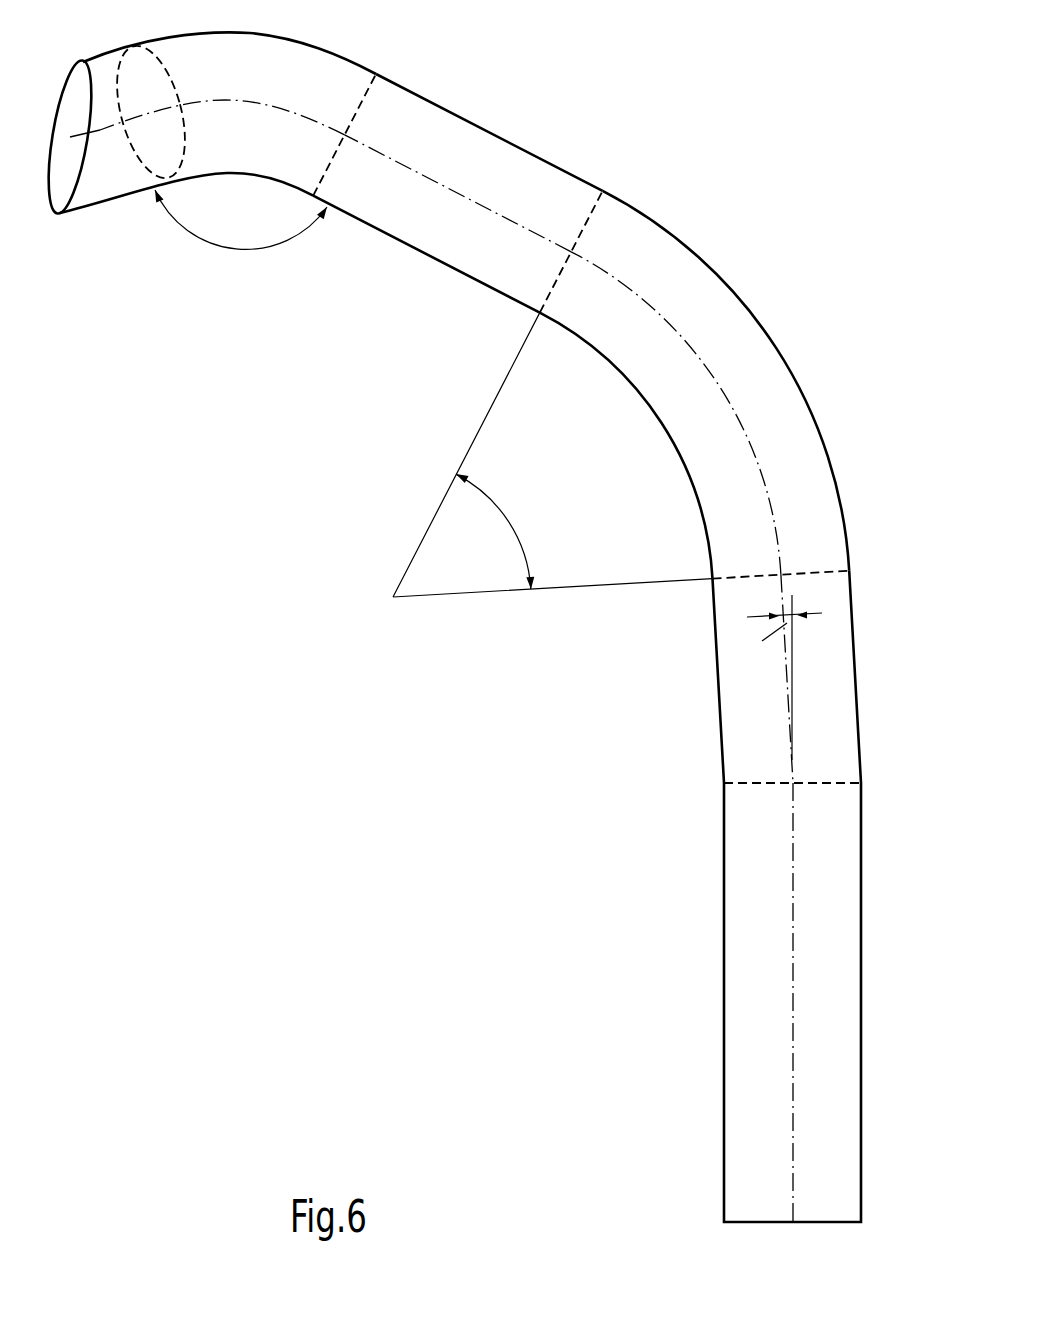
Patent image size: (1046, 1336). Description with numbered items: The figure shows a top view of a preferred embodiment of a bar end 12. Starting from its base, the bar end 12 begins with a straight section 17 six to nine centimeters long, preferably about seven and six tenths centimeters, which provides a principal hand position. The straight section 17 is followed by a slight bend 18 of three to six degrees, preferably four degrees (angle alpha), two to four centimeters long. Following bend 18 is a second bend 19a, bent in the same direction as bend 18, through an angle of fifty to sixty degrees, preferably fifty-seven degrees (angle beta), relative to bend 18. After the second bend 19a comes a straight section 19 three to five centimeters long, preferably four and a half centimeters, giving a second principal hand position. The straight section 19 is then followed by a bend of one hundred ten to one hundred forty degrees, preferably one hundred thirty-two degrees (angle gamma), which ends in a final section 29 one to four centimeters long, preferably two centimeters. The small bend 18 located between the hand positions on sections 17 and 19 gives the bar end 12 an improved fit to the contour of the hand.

The bar end 12 is at (484, 627).
The straight section 17 is at (862, 1069).
The bend 18 is at (856, 665).
The straight section 19 is at (440, 106).
The second bend 19a is at (717, 270).
The final section 29 is at (120, 197).